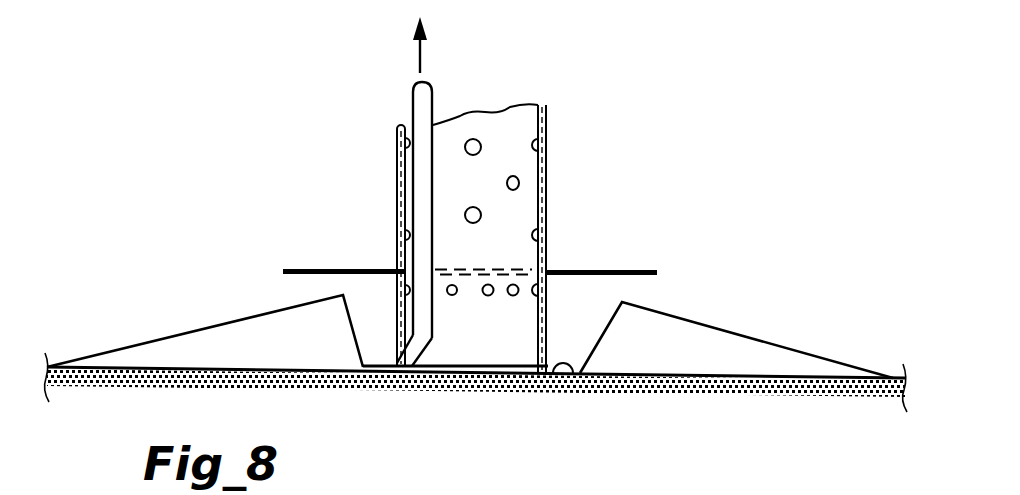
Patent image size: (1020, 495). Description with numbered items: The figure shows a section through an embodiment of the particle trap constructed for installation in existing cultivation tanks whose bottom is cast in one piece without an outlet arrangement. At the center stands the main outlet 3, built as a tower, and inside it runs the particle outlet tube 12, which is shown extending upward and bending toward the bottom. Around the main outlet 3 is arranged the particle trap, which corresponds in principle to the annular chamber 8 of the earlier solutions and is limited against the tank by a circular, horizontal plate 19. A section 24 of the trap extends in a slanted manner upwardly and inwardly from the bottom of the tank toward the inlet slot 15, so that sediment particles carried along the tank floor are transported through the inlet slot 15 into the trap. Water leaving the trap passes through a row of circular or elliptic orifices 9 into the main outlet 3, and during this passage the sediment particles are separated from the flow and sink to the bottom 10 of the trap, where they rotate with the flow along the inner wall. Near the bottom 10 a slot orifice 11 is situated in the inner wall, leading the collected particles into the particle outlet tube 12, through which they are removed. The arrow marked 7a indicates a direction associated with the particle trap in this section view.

The main outlet 3 is at (546, 169).
The direction of force arrow 7a is at (594, 244).
The annular chamber 8 is at (353, 318).
The orifices 9 is at (546, 303).
The bottom 10 is at (572, 373).
The slot orifice 11 is at (389, 345).
The particle outlet tube 12 is at (411, 103).
The inlet slot 15 is at (643, 287).
The circular horizontal plate 19 is at (648, 270).
The slanted section 24 is at (185, 332).